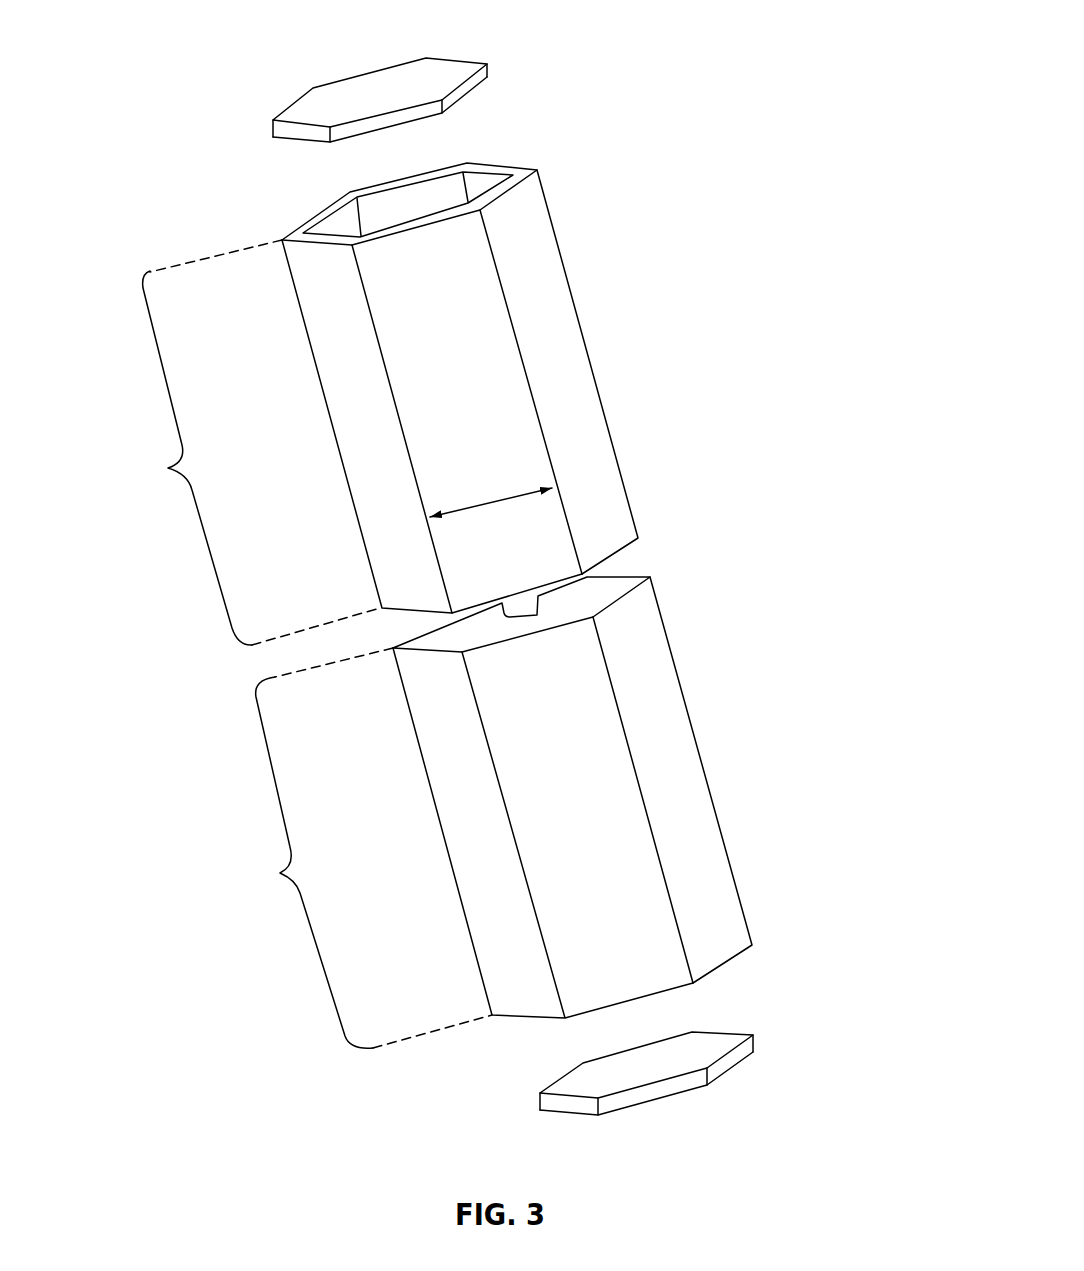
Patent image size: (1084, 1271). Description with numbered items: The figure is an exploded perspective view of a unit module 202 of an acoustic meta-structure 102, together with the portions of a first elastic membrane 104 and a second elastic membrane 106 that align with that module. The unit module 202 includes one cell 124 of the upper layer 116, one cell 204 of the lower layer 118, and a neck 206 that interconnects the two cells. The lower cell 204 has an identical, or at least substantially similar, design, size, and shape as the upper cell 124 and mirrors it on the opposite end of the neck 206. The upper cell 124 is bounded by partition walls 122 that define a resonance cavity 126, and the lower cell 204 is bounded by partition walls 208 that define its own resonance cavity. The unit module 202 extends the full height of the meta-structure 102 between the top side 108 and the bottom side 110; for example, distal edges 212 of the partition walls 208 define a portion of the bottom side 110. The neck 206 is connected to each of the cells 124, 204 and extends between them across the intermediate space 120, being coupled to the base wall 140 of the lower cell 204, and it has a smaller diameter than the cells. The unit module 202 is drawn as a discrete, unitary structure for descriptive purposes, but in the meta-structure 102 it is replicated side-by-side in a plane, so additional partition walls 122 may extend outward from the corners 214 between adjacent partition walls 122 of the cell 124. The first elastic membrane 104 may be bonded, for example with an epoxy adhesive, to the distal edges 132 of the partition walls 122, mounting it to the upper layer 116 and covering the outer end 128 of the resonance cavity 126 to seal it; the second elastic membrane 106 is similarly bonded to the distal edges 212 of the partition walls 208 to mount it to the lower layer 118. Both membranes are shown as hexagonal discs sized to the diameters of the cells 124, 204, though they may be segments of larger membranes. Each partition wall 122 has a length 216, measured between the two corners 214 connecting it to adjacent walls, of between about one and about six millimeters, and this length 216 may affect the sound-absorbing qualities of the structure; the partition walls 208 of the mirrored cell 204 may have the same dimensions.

The meta-structure 102 is at (700, 193).
The first elastic membrane 104 is at (378, 93).
The second elastic membrane 106 is at (655, 1092).
The top side 108 is at (543, 157).
The bottom side 110 is at (774, 948).
The upper layer 116 is at (250, 442).
The lower layer 118 is at (361, 848).
The intermediate space 120 is at (637, 553).
The partition walls 122 is at (567, 347).
The cell 124 is at (548, 260).
The resonance cavity 126 is at (480, 187).
The outer end 128 is at (437, 188).
The distal edges 132 is at (407, 220).
The base wall 140 is at (595, 593).
The unit module 202 is at (275, 333).
The cell 204 is at (672, 730).
The neck 206 is at (500, 607).
The partition walls 208 is at (627, 838).
The distal edges 212 is at (692, 985).
The corners 214 is at (513, 330).
The length 216 is at (507, 495).